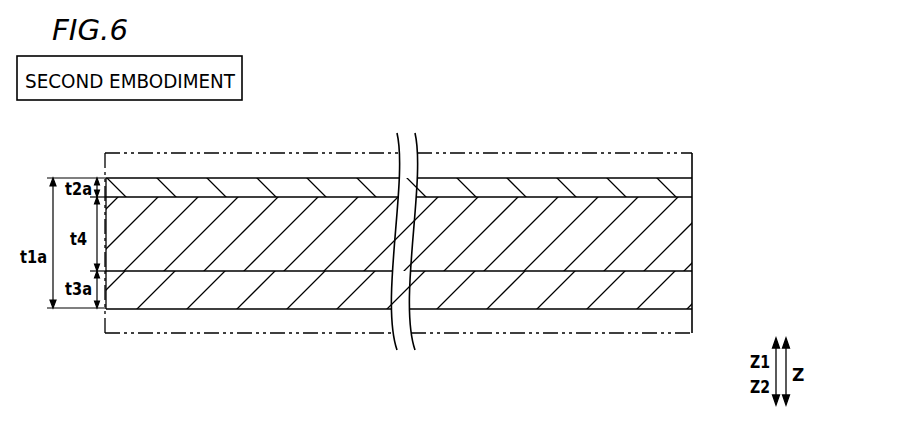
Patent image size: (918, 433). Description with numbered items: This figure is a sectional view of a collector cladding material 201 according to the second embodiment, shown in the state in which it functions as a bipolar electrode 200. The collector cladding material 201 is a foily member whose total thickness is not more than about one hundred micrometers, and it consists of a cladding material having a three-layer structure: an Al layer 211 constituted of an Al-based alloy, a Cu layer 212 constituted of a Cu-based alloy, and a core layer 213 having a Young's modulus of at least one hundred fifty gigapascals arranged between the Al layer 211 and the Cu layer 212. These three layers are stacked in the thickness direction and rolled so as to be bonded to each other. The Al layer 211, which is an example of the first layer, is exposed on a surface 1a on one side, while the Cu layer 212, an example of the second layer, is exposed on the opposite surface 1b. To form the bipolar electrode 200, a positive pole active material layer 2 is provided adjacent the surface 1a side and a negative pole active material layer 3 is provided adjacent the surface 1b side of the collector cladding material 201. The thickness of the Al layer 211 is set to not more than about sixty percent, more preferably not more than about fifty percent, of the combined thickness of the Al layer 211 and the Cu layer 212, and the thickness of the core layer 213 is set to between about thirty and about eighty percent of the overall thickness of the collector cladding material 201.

The bipolar electrode 200 is at (703, 133).
The positive pole active material layer 2 is at (692, 172).
The negative pole active material layer 3 is at (692, 319).
The collector cladding material 201 is at (758, 183).
The Al layer 211 is at (657, 183).
The core layer 213 is at (657, 230).
The Cu layer 212 is at (655, 292).
The surface 1a is at (556, 178).
The surface 1b is at (555, 309).